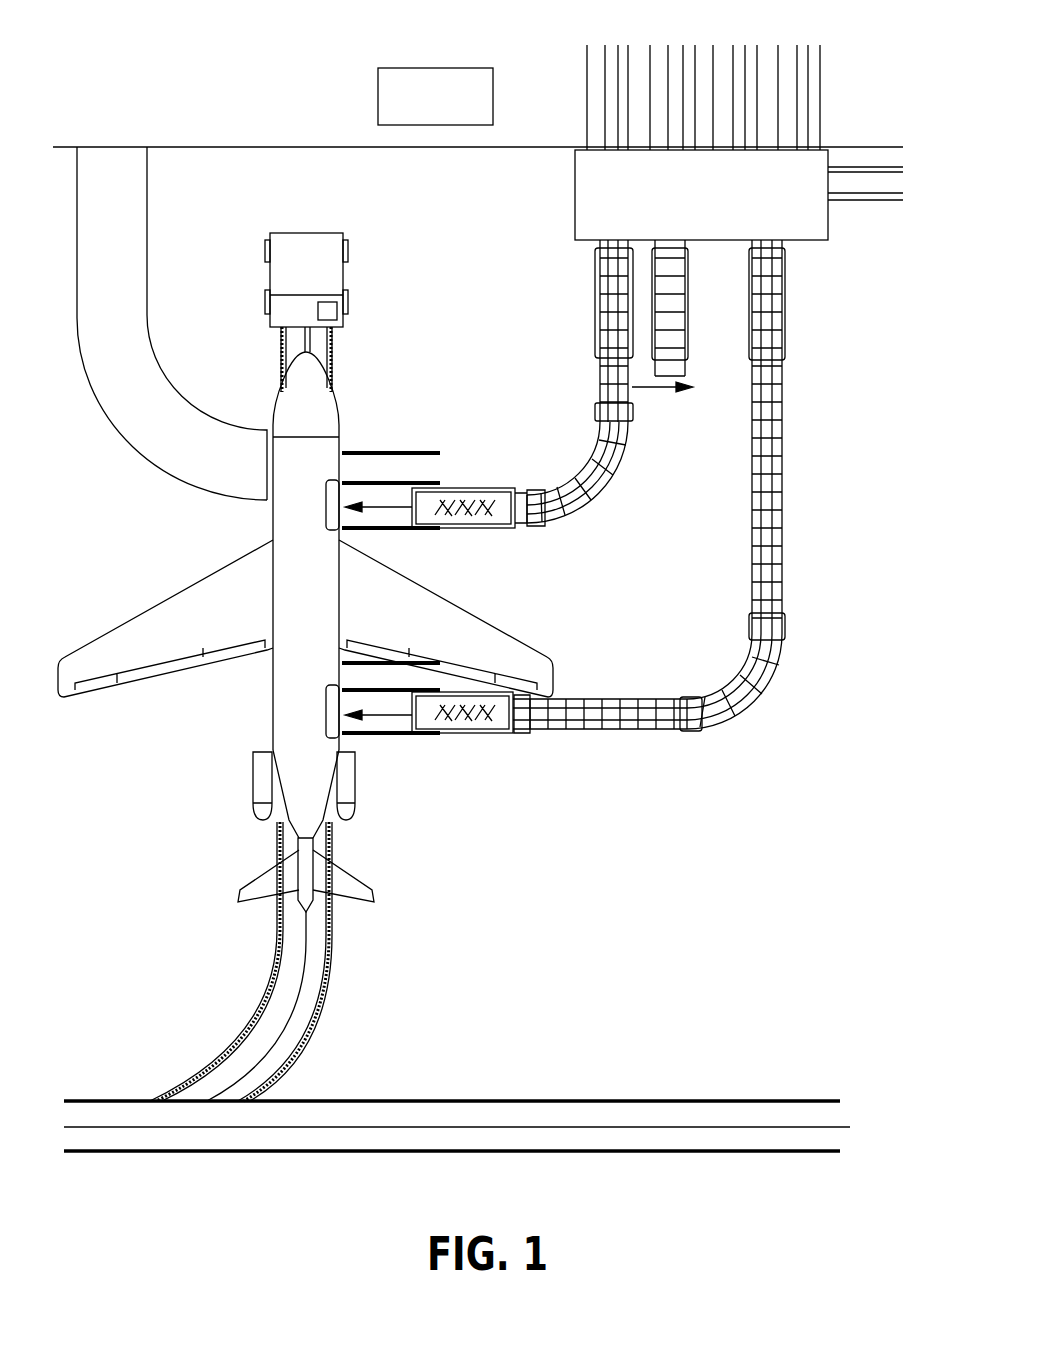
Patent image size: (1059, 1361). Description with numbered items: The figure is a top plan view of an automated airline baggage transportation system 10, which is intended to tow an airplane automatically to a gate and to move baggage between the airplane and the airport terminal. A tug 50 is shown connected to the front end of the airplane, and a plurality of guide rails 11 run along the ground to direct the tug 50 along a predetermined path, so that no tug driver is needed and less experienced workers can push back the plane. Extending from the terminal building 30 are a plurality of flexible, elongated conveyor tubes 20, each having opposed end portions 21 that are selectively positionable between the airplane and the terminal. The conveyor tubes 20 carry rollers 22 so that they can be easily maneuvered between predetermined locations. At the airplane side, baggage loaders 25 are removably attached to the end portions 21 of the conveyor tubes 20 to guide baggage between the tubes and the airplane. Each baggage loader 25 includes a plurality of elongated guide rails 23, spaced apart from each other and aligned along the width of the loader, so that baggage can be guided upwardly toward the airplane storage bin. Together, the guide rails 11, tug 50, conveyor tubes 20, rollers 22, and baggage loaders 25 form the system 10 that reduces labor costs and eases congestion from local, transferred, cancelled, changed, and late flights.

The automated airline baggage transportation system 10 is at (511, 907).
The guide rails 11 is at (281, 360).
The conveyor tubes 20 is at (598, 495).
The end portions 21 is at (598, 241).
The rollers 22 is at (478, 529).
The elongated guide rails 23 is at (385, 735).
The baggage loaders 25 is at (475, 735).
The terminal building 30 is at (575, 186).
The tug 50 is at (310, 253).